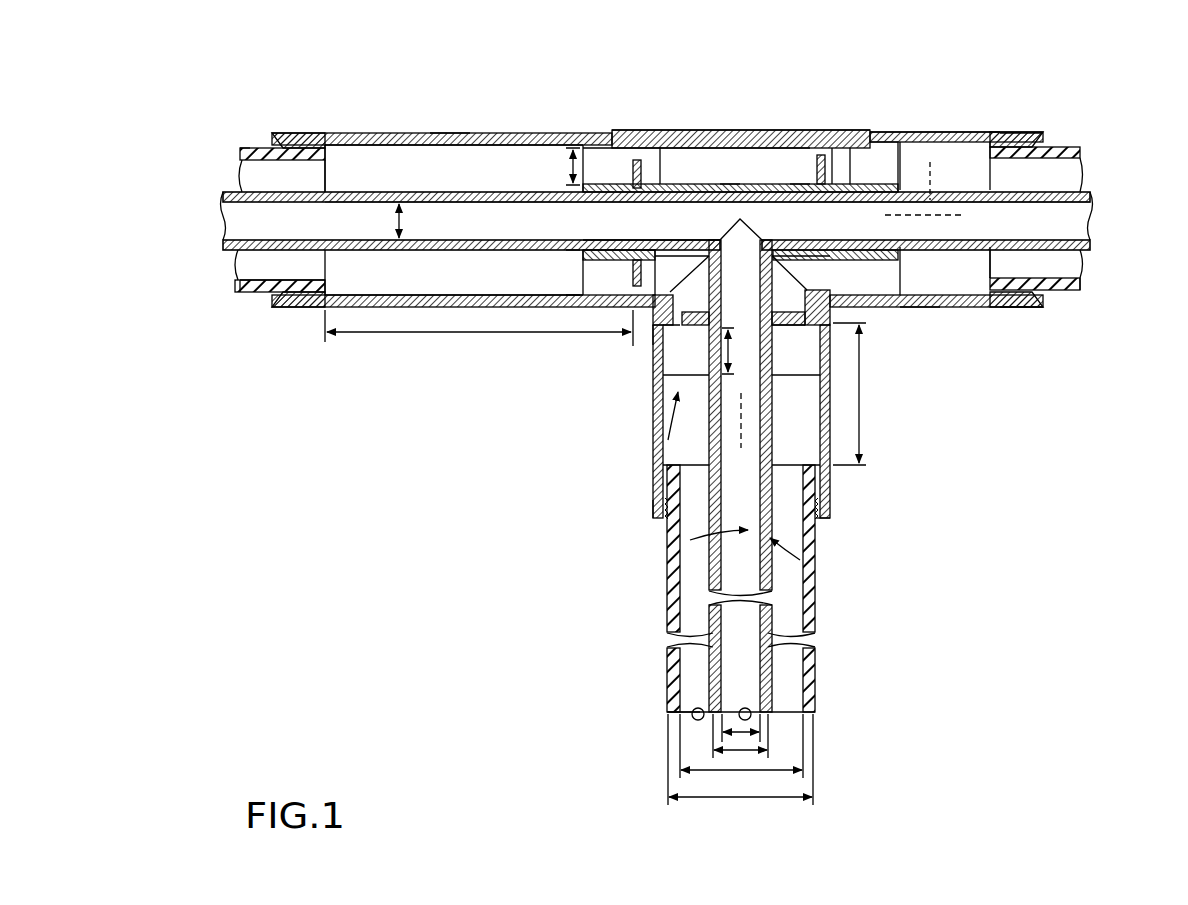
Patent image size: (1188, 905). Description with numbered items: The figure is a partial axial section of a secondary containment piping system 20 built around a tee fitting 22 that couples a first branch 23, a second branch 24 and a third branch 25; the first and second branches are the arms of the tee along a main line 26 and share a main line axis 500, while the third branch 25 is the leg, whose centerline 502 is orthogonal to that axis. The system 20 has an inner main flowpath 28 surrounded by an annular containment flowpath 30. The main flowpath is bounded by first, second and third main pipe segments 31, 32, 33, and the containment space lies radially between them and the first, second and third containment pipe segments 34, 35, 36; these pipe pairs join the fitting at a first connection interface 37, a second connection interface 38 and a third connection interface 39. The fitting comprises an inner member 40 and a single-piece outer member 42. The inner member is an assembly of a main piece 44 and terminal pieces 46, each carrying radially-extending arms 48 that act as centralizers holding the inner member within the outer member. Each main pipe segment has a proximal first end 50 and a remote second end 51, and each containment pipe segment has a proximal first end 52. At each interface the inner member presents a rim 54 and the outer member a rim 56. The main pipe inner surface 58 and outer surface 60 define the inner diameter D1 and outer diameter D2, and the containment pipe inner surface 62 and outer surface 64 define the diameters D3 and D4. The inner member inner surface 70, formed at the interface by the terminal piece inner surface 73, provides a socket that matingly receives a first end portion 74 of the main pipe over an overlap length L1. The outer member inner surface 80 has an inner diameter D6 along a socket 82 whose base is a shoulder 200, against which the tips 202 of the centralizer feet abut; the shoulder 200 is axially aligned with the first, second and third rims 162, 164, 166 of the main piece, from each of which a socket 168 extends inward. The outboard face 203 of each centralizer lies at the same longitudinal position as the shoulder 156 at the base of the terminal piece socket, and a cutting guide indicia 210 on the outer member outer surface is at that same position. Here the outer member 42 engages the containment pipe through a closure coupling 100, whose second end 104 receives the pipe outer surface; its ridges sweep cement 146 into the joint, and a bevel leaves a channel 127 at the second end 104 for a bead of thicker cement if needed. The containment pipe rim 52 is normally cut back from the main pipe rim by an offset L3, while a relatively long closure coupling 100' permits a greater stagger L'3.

The secondary containment piping system 20 is at (522, 470).
The fitting 22 is at (627, 345).
The first branch 23 is at (1020, 95).
The second branch 24 is at (440, 130).
The third branch 25 is at (840, 526).
The main line 26 is at (562, 131).
The main flowpath 28 is at (448, 231).
The containment flowpath 30 is at (441, 173).
The first main pipe segment 31 is at (930, 250).
The second main pipe segment 32 is at (404, 246).
The third main pipe segment 33 is at (762, 496).
The first containment pipe segment 34 is at (1060, 290).
The second containment pipe segment 35 is at (258, 294).
The third containment pipe segment 36 is at (815, 546).
The first connection interface 37 is at (935, 131).
The second connection interface 38 is at (565, 168).
The third connection interface 39 is at (655, 445).
The inner member 40 is at (762, 183).
The outer member 42 is at (694, 131).
The main piece 44 is at (727, 183).
The terminal pieces 46 is at (802, 183).
The radially-extending arms 48 is at (614, 244).
The first end 50 is at (613, 189).
The second end 51 is at (748, 708).
The first end 52 is at (328, 170).
The rim 54 is at (578, 240).
The rim 56 is at (572, 284).
The main pipe inner surface 58 is at (275, 266).
The main pipe outer surface 60 is at (250, 143).
The containment pipe inner surface 62 is at (690, 540).
The containment pipe outer surface 64 is at (800, 560).
The inner member inner surface 70 is at (700, 236).
The inner surface of terminal piece 73 is at (664, 232).
The first end portion 74 is at (676, 392).
The outer member inner surface 80 is at (862, 264).
The socket 82 is at (660, 150).
The closure coupling 100 is at (767, 423).
The relatively long closure coupling 100' is at (469, 79).
The second end 104 is at (1010, 146).
The channel 127 is at (1048, 138).
The cement 146 is at (992, 300).
The shoulder 156 is at (856, 192).
The first end 162 is at (824, 158).
The second end 164 is at (650, 282).
The third end 166 is at (792, 339).
The socket 168 is at (687, 339).
The shoulder 200 is at (848, 300).
The tips 202 is at (832, 160).
The outboard face 203 is at (888, 146).
The cutting guide indicia 210 is at (636, 130).
The main line axis 500 is at (945, 167).
The centerline 502 is at (760, 420).
The main pipe inner diameter D1 is at (750, 770).
The main pipe outer diameter D2 is at (745, 800).
The containment pipe inner diameter D3 is at (397, 220).
The containment pipe outer diameter D4 is at (738, 750).
The outer member inner diameter D6 is at (572, 148).
The first end portion length L1 is at (731, 352).
The normal offset L3 is at (862, 398).
The greater offset L'3 is at (479, 356).